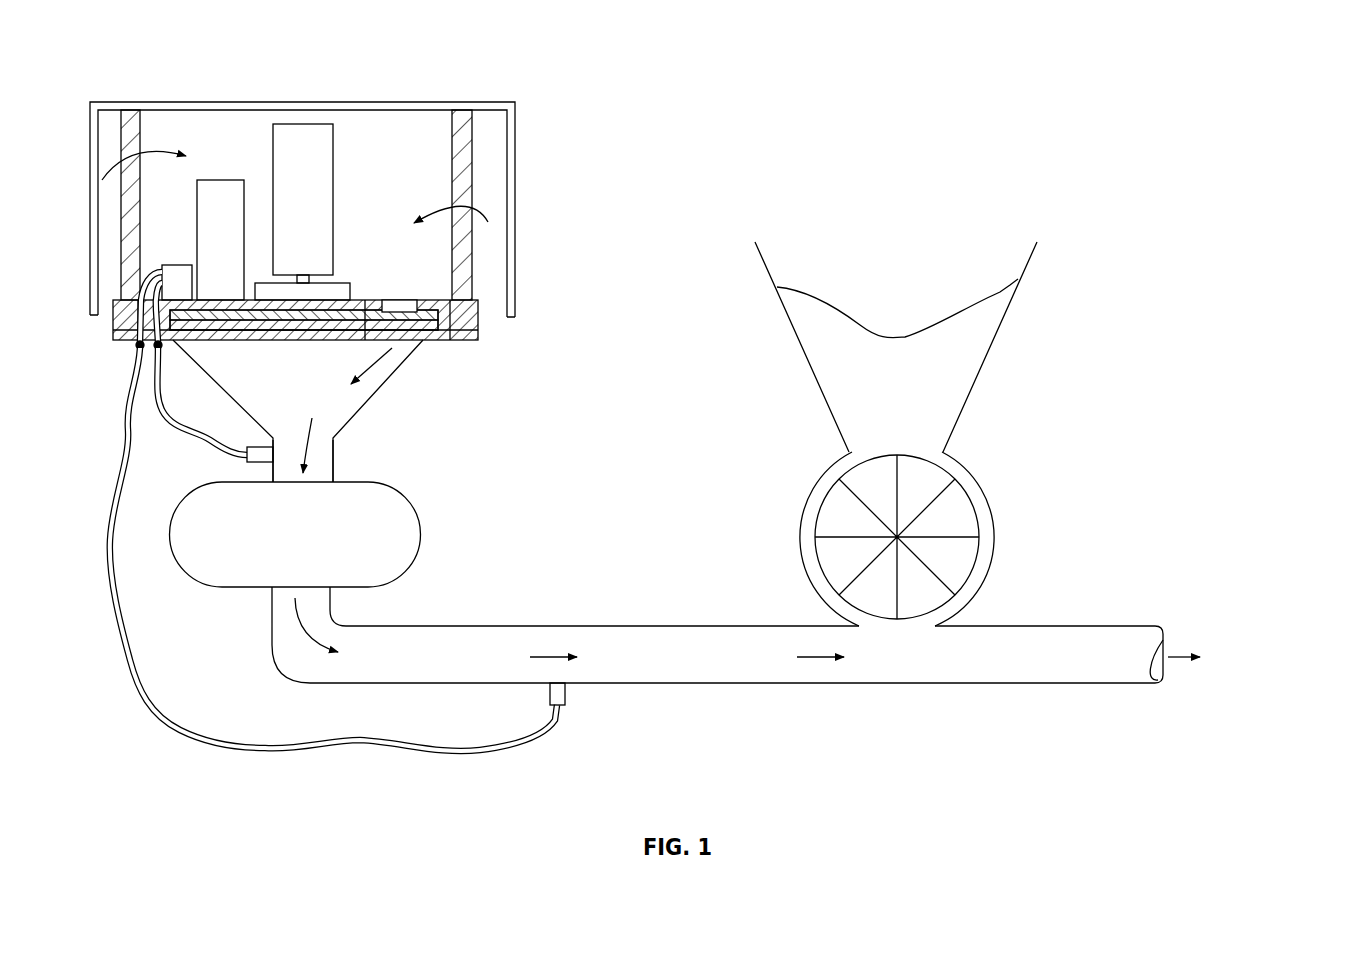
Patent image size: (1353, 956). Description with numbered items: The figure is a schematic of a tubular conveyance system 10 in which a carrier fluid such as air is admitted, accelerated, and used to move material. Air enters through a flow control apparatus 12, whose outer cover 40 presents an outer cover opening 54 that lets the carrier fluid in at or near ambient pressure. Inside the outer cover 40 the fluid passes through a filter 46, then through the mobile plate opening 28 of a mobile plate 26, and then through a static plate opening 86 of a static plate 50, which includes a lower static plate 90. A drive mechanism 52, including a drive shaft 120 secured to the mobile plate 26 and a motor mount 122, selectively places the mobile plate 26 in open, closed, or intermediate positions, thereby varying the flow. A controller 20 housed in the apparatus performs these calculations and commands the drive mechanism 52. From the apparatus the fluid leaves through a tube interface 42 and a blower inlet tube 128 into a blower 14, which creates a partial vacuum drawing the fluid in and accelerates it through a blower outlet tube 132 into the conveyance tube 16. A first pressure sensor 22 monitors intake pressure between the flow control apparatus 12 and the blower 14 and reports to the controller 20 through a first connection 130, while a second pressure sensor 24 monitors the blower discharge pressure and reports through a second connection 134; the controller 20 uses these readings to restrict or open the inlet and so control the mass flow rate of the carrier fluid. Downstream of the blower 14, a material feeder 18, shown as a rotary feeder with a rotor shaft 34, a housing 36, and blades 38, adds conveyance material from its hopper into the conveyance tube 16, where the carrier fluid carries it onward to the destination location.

The tubular conveyance system 10 is at (699, 404).
The flow control apparatus 12 is at (320, 404).
The blower 14 is at (431, 496).
The conveyance tube 16 is at (645, 626).
The material feeder 18 is at (873, 409).
The controller 20 is at (221, 127).
The first pressure sensor 22 is at (257, 442).
The second pressure sensor 24 is at (569, 695).
The mobile plate 26 is at (345, 318).
The mobile plate opening 28 is at (397, 322).
The rotor shaft 34 is at (900, 537).
The housing 36 is at (988, 363).
The blade 38 is at (975, 530).
The outer cover 40 is at (516, 212).
The tube interface 42 is at (423, 419).
The filter 46 is at (130, 131).
The static plate 50 is at (477, 305).
The drive mechanism 52 is at (322, 158).
The outer cover opening 54 is at (110, 313).
The static plate opening 86 is at (412, 302).
The lower static plate 90 is at (443, 335).
The drive shaft 120 is at (306, 281).
The motor mount 122 is at (350, 297).
The blower inlet tube 128 is at (335, 468).
The first connection 130 is at (166, 348).
The blower outlet tube 132 is at (331, 594).
The second connection 134 is at (133, 349).